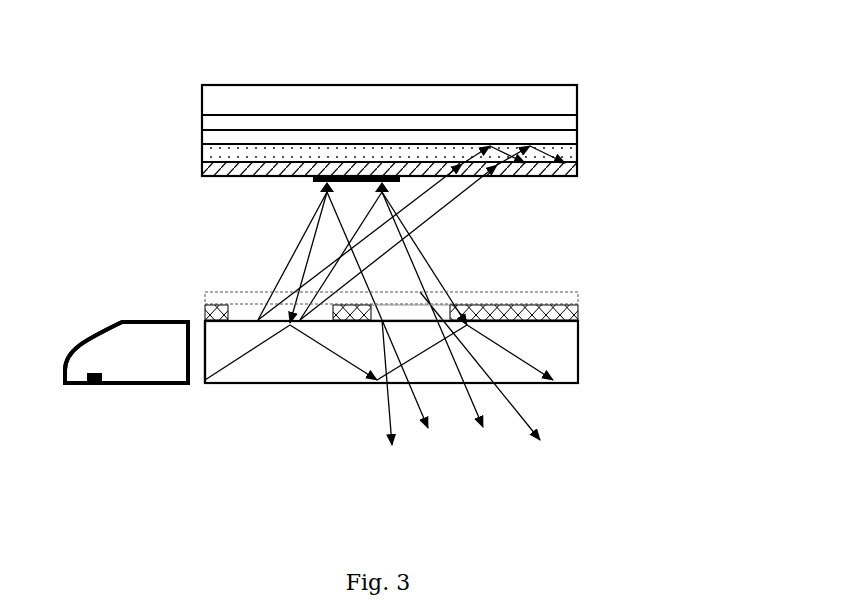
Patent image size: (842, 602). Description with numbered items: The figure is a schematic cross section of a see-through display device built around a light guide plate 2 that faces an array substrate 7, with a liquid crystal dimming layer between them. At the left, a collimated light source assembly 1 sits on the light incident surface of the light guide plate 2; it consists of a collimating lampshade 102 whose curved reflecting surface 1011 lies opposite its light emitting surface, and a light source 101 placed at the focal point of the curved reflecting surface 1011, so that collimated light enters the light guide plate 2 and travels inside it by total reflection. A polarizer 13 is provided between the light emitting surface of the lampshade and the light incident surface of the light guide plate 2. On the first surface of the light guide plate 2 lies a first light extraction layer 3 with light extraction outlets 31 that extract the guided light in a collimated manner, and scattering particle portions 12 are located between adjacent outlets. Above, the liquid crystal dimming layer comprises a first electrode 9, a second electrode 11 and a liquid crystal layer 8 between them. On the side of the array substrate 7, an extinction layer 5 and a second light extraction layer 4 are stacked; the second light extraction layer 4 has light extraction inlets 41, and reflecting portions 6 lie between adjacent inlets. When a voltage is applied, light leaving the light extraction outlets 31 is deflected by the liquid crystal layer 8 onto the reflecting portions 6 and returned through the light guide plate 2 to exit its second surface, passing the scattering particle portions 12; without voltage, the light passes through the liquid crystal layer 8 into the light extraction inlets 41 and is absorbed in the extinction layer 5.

The collimated light source assembly 1 is at (165, 484).
The light source 101 is at (160, 385).
The curved reflecting surface 1011 is at (76, 350).
The collimating lampshade 102 is at (92, 385).
The light guide plate 2 is at (580, 357).
The first light extraction layer 3 is at (582, 311).
The light extraction outlets 31 is at (237, 303).
The second light extraction layer 4 is at (203, 166).
The light extraction inlets 41 is at (440, 146).
The extinction layer 5 is at (203, 148).
The reflecting portions 6 is at (428, 186).
The display panel 7 is at (580, 121).
The liquid crystal layer 8 is at (547, 237).
The first electrode 9 is at (582, 296).
The second electrode 11 is at (580, 136).
The scattering particle portions 12 is at (365, 323).
The polarizer 13 is at (205, 386).